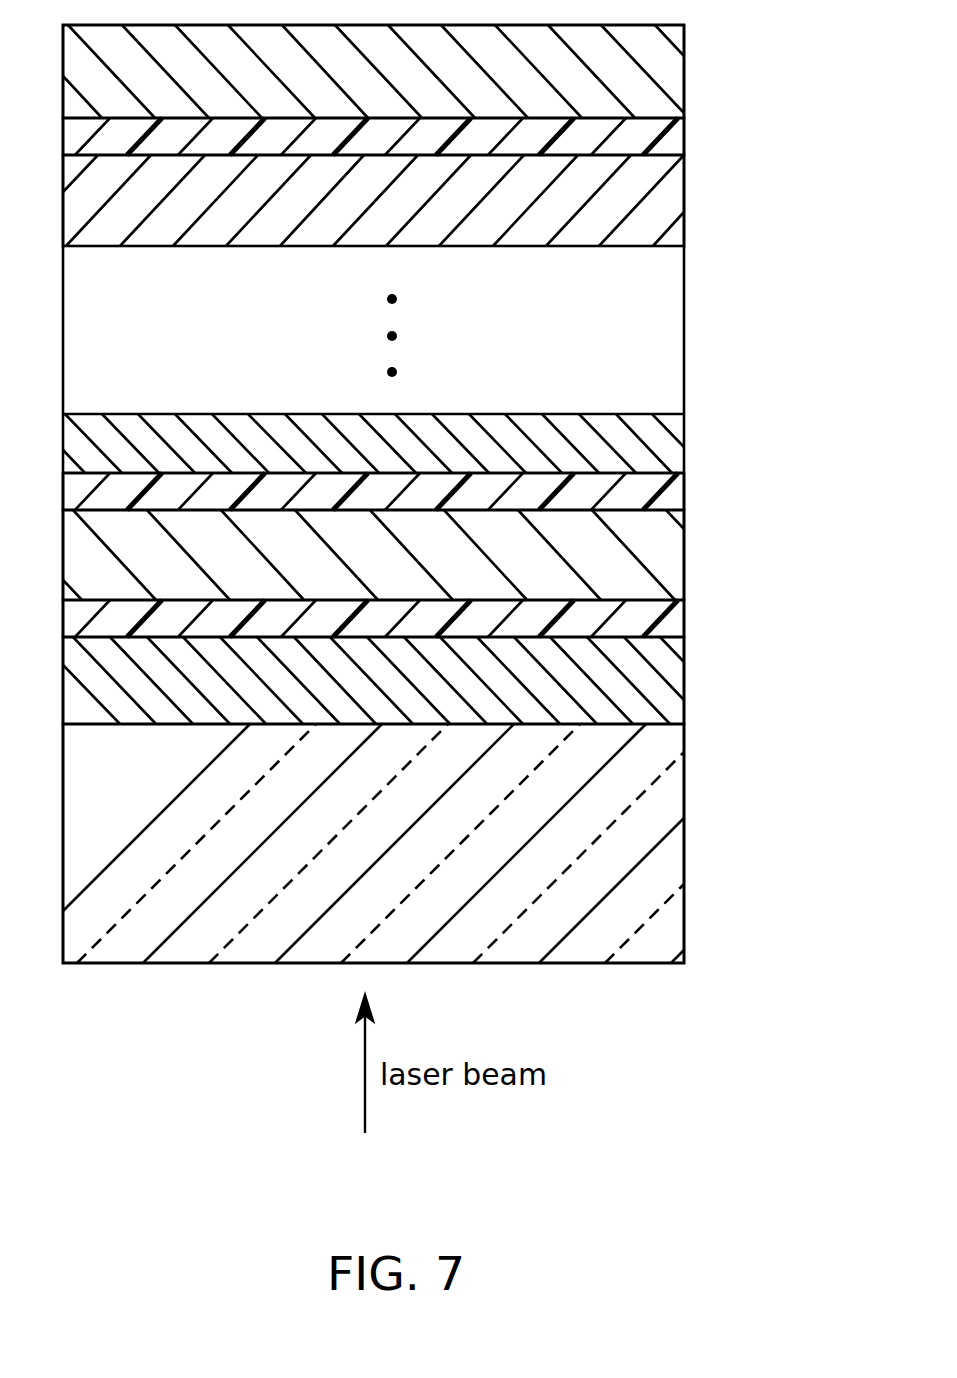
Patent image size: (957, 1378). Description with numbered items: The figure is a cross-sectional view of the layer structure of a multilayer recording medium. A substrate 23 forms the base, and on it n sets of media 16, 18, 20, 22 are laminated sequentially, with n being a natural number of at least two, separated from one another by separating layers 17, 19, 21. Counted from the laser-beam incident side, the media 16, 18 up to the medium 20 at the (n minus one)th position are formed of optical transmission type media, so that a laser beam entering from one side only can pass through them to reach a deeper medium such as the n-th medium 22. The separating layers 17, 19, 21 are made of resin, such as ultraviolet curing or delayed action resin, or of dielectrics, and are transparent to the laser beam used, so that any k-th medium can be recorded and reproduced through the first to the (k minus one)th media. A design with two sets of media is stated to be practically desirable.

The medium 16 is at (675, 677).
The separating layer 17 is at (675, 615).
The medium 18 is at (675, 553).
The separating layer 19 is at (675, 488).
The medium 20 is at (675, 200).
The separating layer 21 is at (675, 138).
The medium 22 is at (675, 68).
The substrate 23 is at (677, 853).